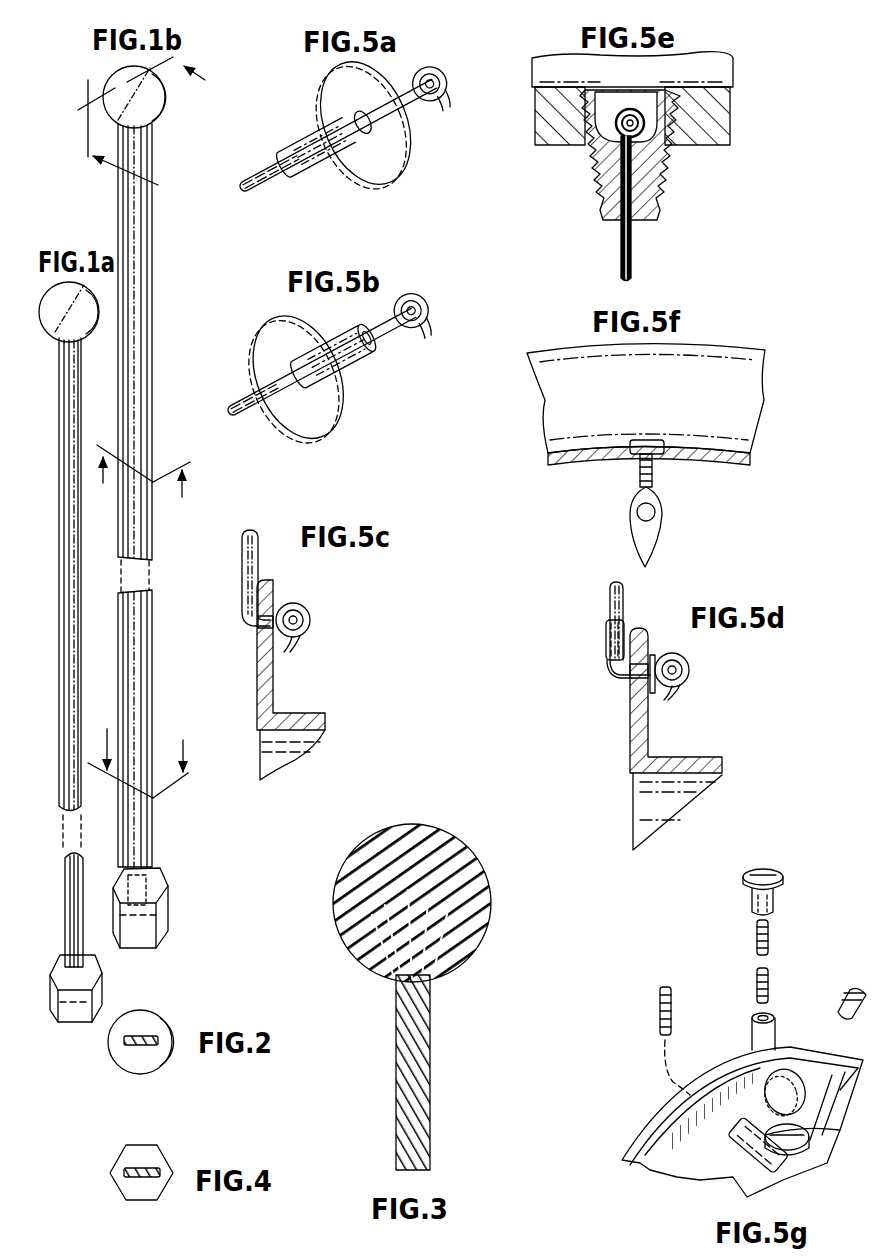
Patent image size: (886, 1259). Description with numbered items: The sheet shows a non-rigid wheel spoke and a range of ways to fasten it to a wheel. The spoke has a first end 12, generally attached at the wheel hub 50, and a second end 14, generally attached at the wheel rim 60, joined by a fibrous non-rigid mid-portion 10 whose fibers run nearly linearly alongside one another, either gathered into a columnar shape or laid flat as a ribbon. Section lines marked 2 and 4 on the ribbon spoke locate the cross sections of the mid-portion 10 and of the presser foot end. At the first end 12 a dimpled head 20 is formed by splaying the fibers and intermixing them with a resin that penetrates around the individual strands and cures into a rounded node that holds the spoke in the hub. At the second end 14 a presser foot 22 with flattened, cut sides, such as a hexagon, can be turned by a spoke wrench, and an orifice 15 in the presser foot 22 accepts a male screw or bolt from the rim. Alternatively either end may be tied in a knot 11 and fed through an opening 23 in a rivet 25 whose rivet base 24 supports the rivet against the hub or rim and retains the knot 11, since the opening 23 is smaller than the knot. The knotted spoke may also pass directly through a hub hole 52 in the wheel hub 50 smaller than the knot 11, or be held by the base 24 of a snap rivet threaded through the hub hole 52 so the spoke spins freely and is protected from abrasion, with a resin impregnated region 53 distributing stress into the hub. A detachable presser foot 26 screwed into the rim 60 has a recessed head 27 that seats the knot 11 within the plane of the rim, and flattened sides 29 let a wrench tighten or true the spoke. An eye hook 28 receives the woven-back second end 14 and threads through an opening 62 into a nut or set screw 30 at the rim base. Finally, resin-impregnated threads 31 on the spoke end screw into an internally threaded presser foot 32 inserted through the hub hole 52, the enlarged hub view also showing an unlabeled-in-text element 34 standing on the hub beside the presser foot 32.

In FIG. 1B, the section line 2— 2 is at (143, 489).
In FIG. 1A, the section line 2— 2 is at (102, 490).
In FIG. 1B, the section line 4— 4 is at (138, 757).
In FIG. 1A, the section line 4— 4 is at (104, 737).
In FIG. 1B, the non-rigid mid-portion 10 is at (150, 383).
In FIG. 1A, the non-rigid mid-portion 10 is at (82, 645).
In FIG. 2, the non-rigid mid-portion 10 is at (136, 1050).
In FIG. 4, the non-rigid mid-portion 10 is at (148, 1165).
In FIG. 3, the non-rigid mid-portion 10 is at (432, 1041).
In FIG. 5A, the non-rigid mid-portion 10 is at (270, 183).
In FIG. 5B, the non-rigid mid-portion 10 is at (250, 412).
In FIG. 5C, the non-rigid mid-portion 10 is at (242, 581).
In FIG. 5D, the non-rigid mid-portion 10 is at (606, 601).
In FIG. 5E, the non-rigid mid-portion 10 is at (618, 268).
In FIG. 5A, the knot 11 is at (445, 84).
In FIG. 5B, the knot 11 is at (426, 300).
In FIG. 5C, the knot 11 is at (311, 620).
In FIG. 5D, the knot 11 is at (687, 676).
In FIG. 5E, the knot 11 is at (624, 102).
In FIG. 1B, the first end 12 is at (99, 74).
In FIG. 1A, the first end 12 is at (82, 380).
In FIG. 3, the first end 12 is at (446, 995).
In FIG. 5G, the first end 12 is at (769, 985).
In FIG. 1B, the second end 14 is at (163, 864).
In FIG. 1A, the second end 14 is at (90, 905).
In FIG. 5F, the second end 14 is at (655, 548).
In FIG. 5G, the second end 14 is at (756, 940).
In FIG. 1B, the orifice 15 is at (150, 942).
In FIG. 1A, the orifice 15 is at (84, 1030).
In FIG. 1B, the dimpled head 20 is at (160, 110).
In FIG. 1A, the dimpled head 20 is at (78, 340).
In FIG. 2, the dimpled head 20 is at (162, 1020).
In FIG. 3, the dimpled head 20 is at (444, 838).
In FIG. 1B, the presser foot 22 is at (168, 905).
In FIG. 1A, the presser foot 22 is at (97, 990).
In FIG. 4, the presser foot 22 is at (128, 1196).
In FIG. 5A, the opening 23 is at (378, 118).
In FIG. 5B, the opening 23 is at (380, 350).
In FIG. 5E, the opening 23 is at (635, 228).
In FIG. 5A, the rivet base 24 is at (398, 175).
In FIG. 5B, the rivet base 24 is at (330, 440).
In FIG. 5D, the rivet base 24 is at (653, 656).
In FIG. 5A, the rivet 25 is at (357, 162).
In FIG. 5B, the rivet 25 is at (345, 420).
In FIG. 5D, the rivet 25 is at (605, 640).
In FIG. 5E, the presser foot 26 is at (658, 192).
In FIG. 5E, the recessed head 27 is at (641, 98).
In FIG. 5F, the eye hook 28 is at (661, 499).
In FIG. 5E, the flattened sides 29 is at (598, 203).
In FIG. 5F, the nut or set screw 30 is at (662, 442).
In FIG. 5G, the threads 31 is at (770, 938).
In FIG. 5G, the presser foot 32 is at (770, 870).
In FIG. 5G, the tubular post 34 is at (752, 1042).
In FIG. 5C, the wheel hub 50 is at (326, 722).
In FIG. 5D, the wheel hub 50 is at (723, 766).
In FIG. 5G, the wheel hub 50 is at (655, 1118).
In FIG. 5C, the hub hole 52 is at (258, 632).
In FIG. 5D, the hub hole 52 is at (628, 686).
In FIG. 5G, the hub hole 52 is at (750, 1145).
In FIG. 5D, the resin impregnated region 53 is at (607, 668).
In FIG. 5E, the wheel rim 60 is at (714, 130).
In FIG. 5F, the wheel rim 60 is at (752, 413).
In FIG. 5F, the opening 62 is at (638, 470).